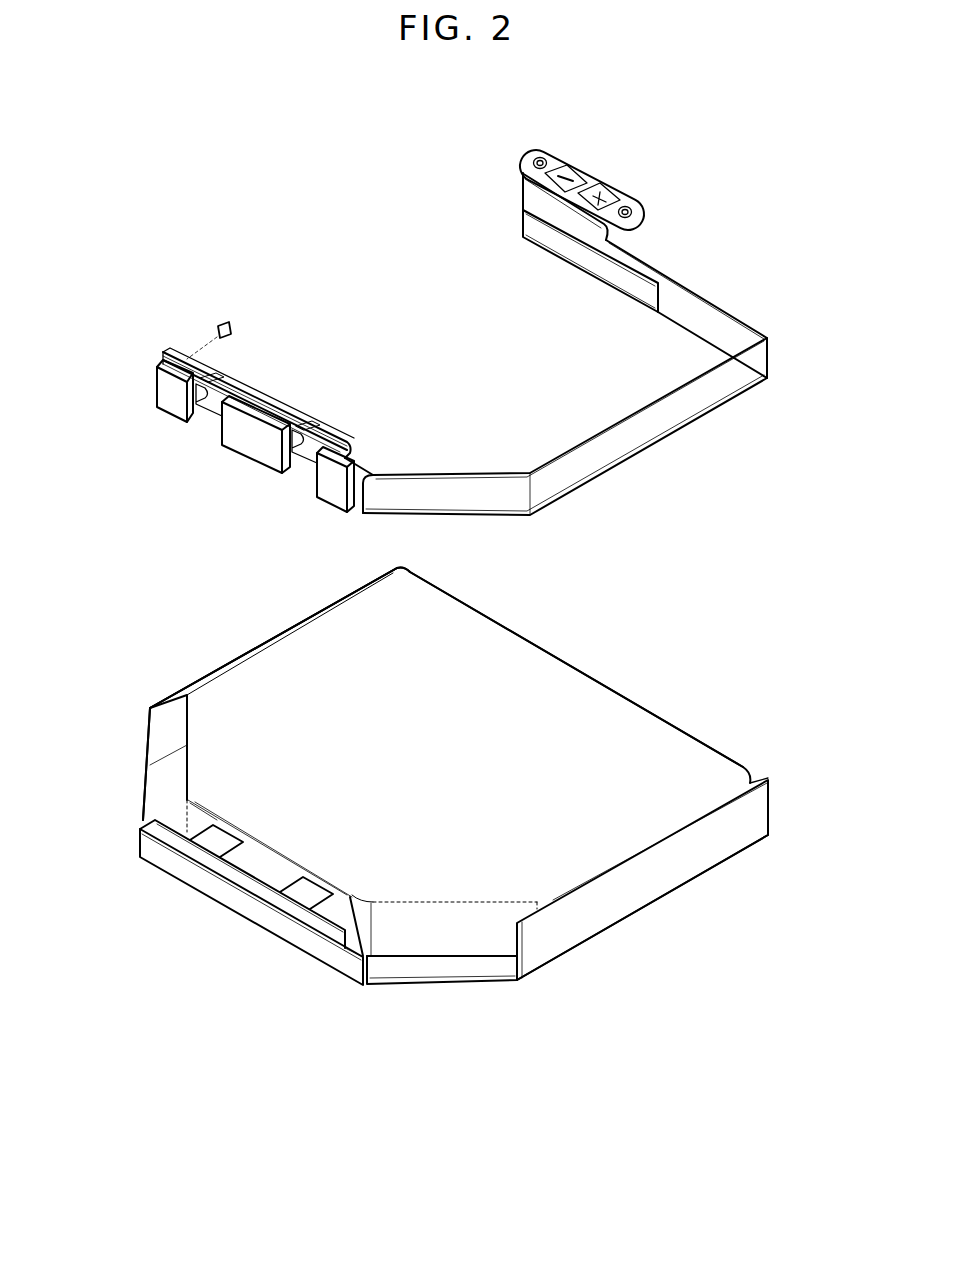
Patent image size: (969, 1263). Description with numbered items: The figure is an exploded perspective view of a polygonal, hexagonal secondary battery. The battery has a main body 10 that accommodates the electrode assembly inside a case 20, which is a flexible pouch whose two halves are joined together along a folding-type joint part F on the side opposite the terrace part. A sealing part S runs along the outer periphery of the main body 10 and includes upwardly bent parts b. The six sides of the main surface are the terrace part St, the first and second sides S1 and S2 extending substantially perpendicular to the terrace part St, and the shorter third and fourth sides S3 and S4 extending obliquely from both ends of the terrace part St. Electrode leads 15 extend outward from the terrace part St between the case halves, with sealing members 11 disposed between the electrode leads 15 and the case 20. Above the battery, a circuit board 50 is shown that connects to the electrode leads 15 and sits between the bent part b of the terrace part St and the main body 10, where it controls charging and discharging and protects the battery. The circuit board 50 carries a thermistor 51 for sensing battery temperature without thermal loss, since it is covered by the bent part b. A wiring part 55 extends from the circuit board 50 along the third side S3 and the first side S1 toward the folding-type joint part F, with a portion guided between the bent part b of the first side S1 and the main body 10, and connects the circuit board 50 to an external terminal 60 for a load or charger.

The main body 10 is at (451, 761).
The sealing member 11 is at (168, 840).
The electrode lead 15 is at (303, 895).
The case 20 is at (488, 632).
The circuit board 50 is at (268, 405).
The thermistor 51 is at (229, 323).
The wiring part 55 is at (448, 467).
The external terminal 60 is at (600, 178).
The bent part b is at (167, 700).
The sealing part S is at (467, 968).
The first side S1 is at (648, 913).
The second side S2 is at (260, 626).
The third side S3 is at (430, 992).
The fourth side S4 is at (133, 800).
The terrace part St is at (225, 915).
The folding-type joint part F is at (597, 655).